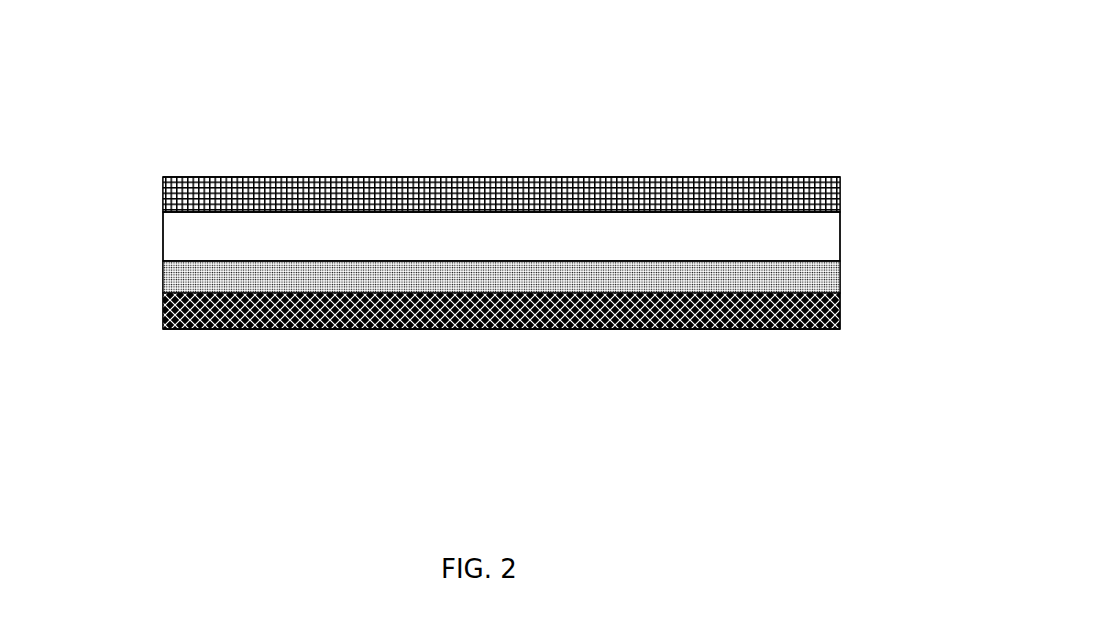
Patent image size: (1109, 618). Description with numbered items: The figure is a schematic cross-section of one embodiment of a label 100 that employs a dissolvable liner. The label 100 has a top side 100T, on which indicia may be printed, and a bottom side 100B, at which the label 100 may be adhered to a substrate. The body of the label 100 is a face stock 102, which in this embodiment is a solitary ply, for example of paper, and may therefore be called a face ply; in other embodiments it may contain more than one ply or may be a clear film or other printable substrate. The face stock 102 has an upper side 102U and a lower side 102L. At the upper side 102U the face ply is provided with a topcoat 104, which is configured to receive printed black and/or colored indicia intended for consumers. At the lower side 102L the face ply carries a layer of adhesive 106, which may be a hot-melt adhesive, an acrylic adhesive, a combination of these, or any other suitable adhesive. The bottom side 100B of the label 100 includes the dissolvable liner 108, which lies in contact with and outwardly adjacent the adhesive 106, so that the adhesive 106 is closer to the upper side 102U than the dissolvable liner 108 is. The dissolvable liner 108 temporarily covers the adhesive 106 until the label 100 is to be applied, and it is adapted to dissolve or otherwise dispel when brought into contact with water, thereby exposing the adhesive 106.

The label 100 is at (785, 82).
The top side 100T is at (437, 143).
The bottom side 100B is at (368, 363).
The face stock 102 is at (163, 233).
The upper side of face stock 102U is at (776, 212).
The lower side of face stock 102L is at (792, 260).
The topcoat 104 is at (163, 192).
The adhesive 106 is at (163, 282).
The dissolvable liner 108 is at (163, 317).